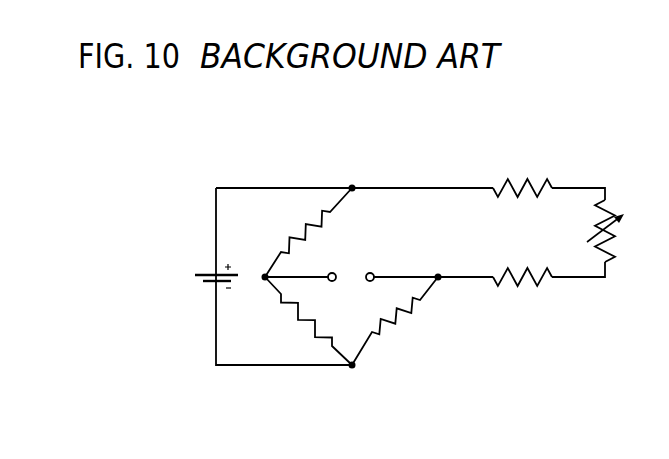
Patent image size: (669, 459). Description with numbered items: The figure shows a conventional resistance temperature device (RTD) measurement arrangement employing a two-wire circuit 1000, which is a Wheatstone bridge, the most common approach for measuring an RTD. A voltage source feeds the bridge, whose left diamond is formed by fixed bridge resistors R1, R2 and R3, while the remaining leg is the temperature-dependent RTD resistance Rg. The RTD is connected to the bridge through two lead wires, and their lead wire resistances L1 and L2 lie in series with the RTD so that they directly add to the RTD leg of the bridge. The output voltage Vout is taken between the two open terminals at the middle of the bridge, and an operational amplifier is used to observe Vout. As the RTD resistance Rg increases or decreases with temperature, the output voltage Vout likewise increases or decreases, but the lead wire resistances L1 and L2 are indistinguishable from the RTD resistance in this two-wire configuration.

The 2-wire circuit 1000 is at (484, 338).
The bridge resistor R1 is at (308, 232).
The bridge resistor R2 is at (308, 321).
The bridge resistor R3 is at (395, 321).
The lead wire resistance L1 is at (522, 200).
The lead wire resistance L2 is at (522, 286).
The RTD resistance Rg is at (612, 231).
The output voltage Vout is at (351, 264).